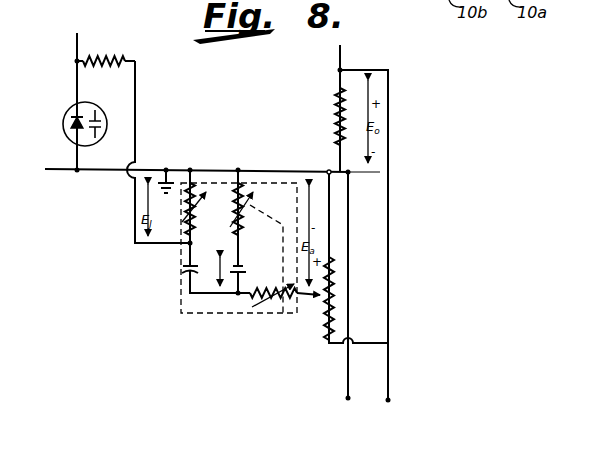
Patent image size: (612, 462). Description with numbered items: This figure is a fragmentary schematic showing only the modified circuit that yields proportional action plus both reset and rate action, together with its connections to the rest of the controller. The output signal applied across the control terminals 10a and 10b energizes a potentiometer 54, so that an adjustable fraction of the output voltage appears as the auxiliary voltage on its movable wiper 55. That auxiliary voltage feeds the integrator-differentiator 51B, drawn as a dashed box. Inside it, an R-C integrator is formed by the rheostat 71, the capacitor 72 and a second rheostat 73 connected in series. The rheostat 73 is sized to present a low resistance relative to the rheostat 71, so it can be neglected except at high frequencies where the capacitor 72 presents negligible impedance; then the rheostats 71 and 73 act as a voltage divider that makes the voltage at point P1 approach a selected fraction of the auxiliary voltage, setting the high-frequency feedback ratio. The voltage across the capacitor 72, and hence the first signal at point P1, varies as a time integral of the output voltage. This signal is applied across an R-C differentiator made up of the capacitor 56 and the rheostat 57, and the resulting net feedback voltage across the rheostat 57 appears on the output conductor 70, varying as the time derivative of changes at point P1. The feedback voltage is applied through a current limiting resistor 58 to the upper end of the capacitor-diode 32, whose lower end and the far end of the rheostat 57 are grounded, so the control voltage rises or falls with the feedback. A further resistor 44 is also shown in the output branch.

The current limiting resistor 58 is at (113, 57).
The capacitor-diode 32 is at (65, 120).
The resistor 44 is at (334, 118).
The rheostat 57 is at (211, 186).
The second rheostat 73 is at (231, 182).
The output conductor 70 is at (133, 223).
The capacitor 56 is at (183, 270).
The capacitor 72 is at (252, 268).
The integrator-differentiator 51B is at (212, 315).
The point P1 is at (232, 300).
The wiper 55 is at (300, 300).
The rheostat 71 is at (268, 312).
The potentiometer 54 is at (323, 322).
The control terminal 10b is at (348, 400).
The control terminal 10a is at (388, 400).